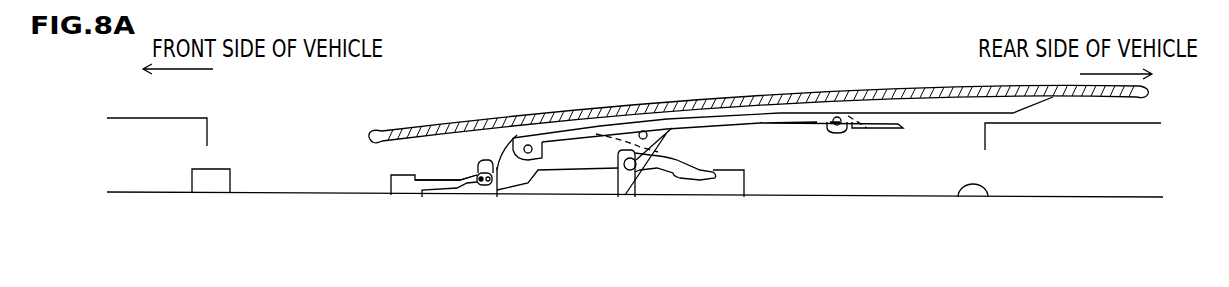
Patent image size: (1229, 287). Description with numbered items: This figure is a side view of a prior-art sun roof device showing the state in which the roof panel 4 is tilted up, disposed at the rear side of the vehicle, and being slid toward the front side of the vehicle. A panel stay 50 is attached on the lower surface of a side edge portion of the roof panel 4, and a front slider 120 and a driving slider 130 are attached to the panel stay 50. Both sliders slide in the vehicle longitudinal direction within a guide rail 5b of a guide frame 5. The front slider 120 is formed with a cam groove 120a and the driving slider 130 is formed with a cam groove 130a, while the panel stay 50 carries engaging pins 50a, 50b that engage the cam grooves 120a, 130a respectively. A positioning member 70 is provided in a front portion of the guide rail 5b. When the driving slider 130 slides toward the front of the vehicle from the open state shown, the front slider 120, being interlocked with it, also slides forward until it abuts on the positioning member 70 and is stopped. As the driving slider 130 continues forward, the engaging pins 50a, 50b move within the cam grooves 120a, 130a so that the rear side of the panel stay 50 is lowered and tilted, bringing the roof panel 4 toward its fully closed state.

The roof panel 4 is at (858, 90).
The guide frame 5 is at (1038, 190).
The guide rail 5b is at (983, 196).
The panel stay 50 is at (867, 128).
The engaging pin 50a is at (493, 186).
The engaging pin 50b is at (630, 176).
The positioning member 70 is at (220, 174).
The front slider 120 is at (402, 188).
The cam groove 120a is at (470, 177).
The driving slider 130 is at (733, 185).
The cam groove 130a is at (685, 183).